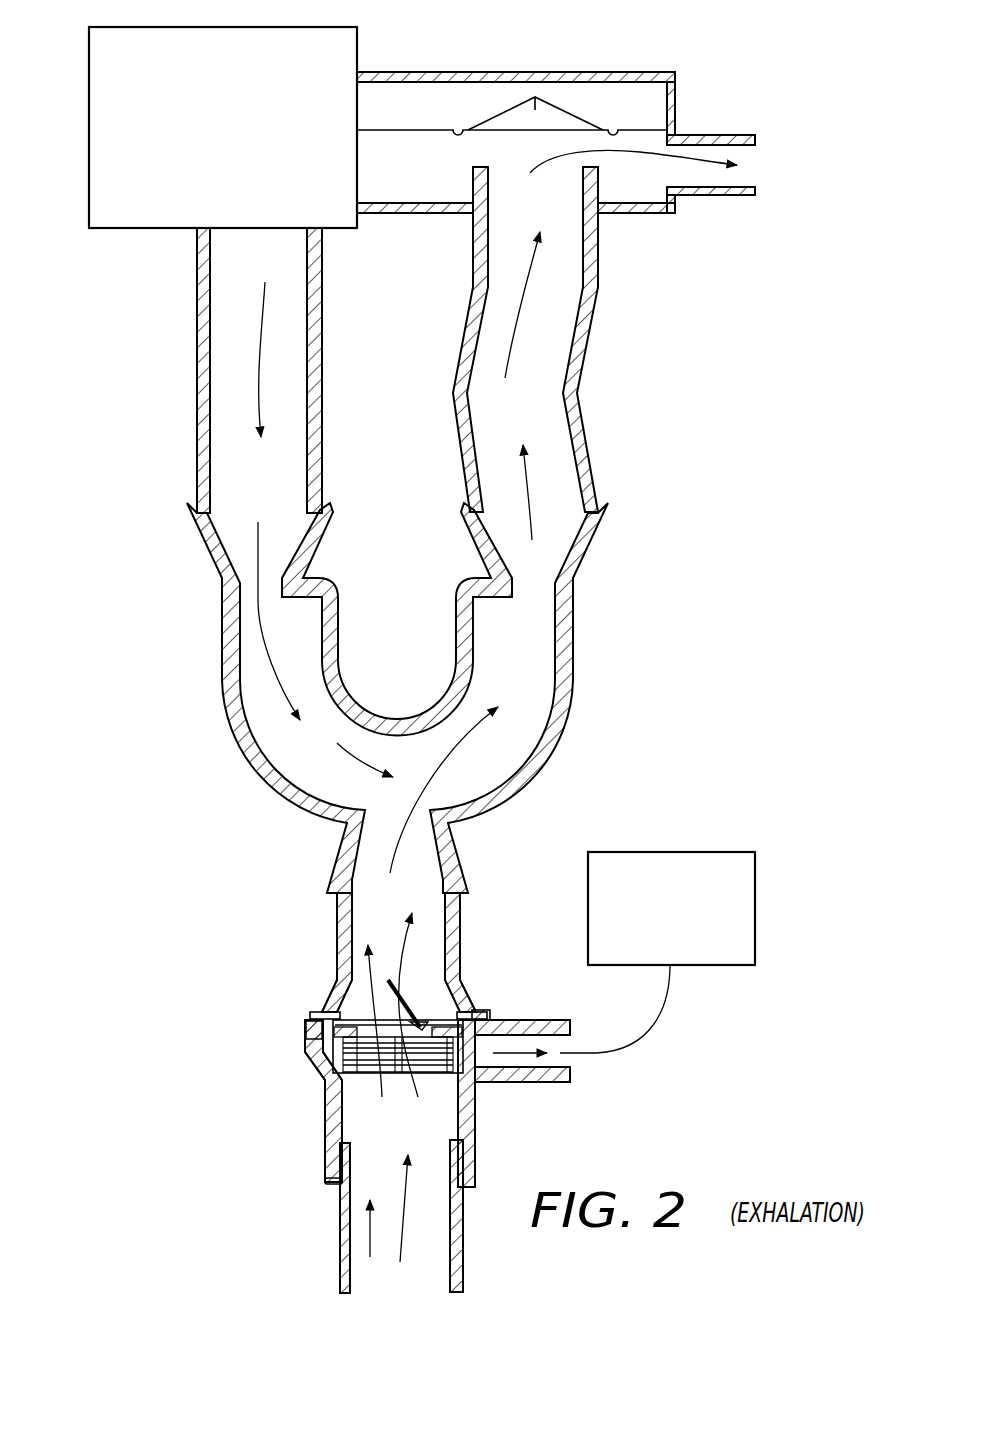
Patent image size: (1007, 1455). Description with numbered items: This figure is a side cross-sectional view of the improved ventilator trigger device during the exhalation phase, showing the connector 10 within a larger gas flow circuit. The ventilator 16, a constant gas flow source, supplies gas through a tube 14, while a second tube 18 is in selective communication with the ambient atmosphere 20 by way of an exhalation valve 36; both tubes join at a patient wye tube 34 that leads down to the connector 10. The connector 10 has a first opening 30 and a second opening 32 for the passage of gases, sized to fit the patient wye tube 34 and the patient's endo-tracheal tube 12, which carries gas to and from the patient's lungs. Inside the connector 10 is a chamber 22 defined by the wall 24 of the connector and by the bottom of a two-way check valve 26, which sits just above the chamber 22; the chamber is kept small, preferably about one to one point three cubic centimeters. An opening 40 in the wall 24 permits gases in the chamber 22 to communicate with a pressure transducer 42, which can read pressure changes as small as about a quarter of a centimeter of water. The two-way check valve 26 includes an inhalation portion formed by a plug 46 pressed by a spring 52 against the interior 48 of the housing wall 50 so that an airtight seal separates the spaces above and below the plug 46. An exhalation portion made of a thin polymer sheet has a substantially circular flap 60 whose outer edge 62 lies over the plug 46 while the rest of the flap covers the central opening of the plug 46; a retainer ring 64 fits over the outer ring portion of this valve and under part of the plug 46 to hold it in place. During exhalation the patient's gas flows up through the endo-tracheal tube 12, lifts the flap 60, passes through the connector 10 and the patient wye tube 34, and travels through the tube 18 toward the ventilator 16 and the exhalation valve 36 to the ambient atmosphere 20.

The connector 10 is at (238, 950).
The endo-tracheal tube 12 is at (340, 1257).
The tube 14 is at (197, 355).
The ventilator 16 is at (158, 232).
The tube 18 is at (577, 390).
The ambient atmosphere 20 is at (763, 167).
The chamber 22 is at (370, 1115).
The wall 24 is at (325, 1105).
The two-way check valve 26 is at (305, 1038).
The first opening 30 is at (423, 1080).
The second opening 32 is at (427, 1193).
The patient wye tube 34 is at (235, 733).
The exhalation valve 36 is at (535, 97).
The opening 40 is at (560, 1058).
The pressure transducer 42 is at (728, 965).
The plug 46 is at (483, 1010).
The interior 48 is at (470, 1012).
The housing wall 50 is at (337, 947).
The spring 52 is at (308, 1063).
The substantially circular flap 60 is at (412, 978).
The outer edge 62 is at (327, 993).
The retainer ring 64 is at (320, 1008).